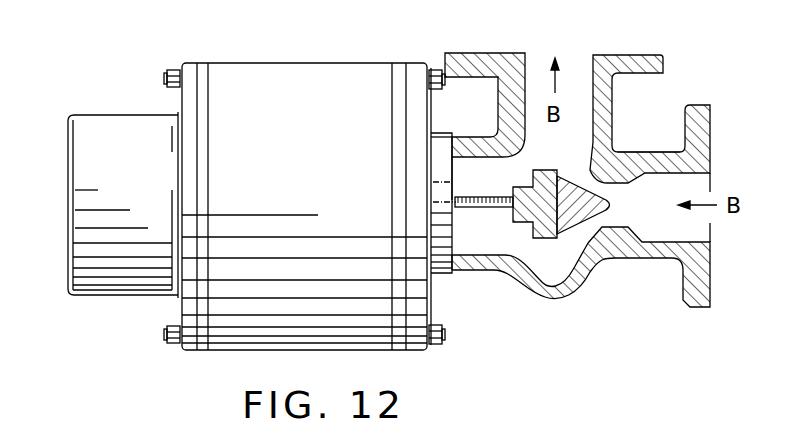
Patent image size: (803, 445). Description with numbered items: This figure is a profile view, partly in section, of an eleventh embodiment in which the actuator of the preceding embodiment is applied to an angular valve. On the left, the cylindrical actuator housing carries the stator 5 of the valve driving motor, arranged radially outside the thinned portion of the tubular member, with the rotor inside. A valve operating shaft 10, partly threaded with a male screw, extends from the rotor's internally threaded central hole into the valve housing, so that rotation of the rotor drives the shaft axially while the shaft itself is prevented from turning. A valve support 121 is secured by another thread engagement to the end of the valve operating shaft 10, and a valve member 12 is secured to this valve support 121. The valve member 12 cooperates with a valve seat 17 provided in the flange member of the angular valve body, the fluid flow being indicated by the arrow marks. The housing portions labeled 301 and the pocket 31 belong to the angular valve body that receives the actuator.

The stator 5 is at (316, 63).
The valve housing 301 is at (640, 55).
The valve seat pocket 31 is at (643, 152).
The valve operating shaft 10 is at (478, 207).
The valve member 12 is at (566, 225).
The valve support 121 is at (508, 258).
The valve seat 17 is at (618, 240).